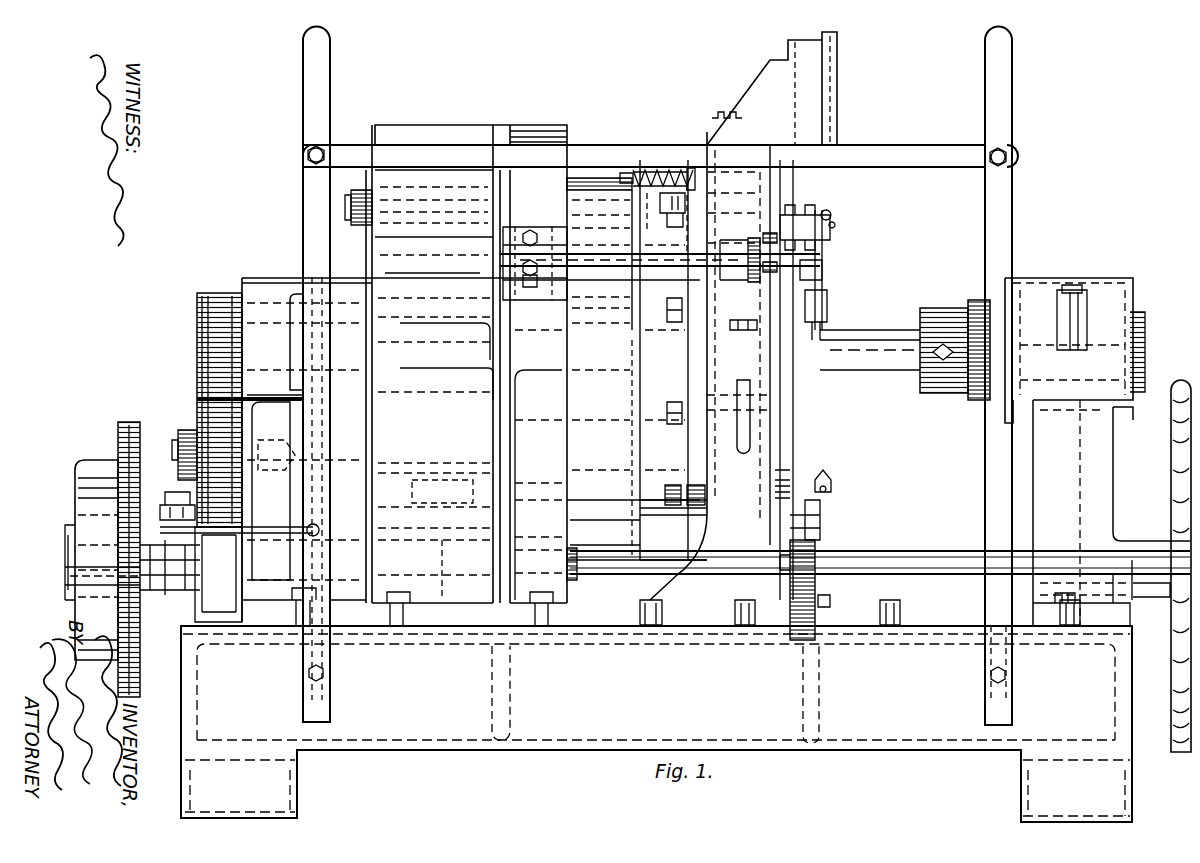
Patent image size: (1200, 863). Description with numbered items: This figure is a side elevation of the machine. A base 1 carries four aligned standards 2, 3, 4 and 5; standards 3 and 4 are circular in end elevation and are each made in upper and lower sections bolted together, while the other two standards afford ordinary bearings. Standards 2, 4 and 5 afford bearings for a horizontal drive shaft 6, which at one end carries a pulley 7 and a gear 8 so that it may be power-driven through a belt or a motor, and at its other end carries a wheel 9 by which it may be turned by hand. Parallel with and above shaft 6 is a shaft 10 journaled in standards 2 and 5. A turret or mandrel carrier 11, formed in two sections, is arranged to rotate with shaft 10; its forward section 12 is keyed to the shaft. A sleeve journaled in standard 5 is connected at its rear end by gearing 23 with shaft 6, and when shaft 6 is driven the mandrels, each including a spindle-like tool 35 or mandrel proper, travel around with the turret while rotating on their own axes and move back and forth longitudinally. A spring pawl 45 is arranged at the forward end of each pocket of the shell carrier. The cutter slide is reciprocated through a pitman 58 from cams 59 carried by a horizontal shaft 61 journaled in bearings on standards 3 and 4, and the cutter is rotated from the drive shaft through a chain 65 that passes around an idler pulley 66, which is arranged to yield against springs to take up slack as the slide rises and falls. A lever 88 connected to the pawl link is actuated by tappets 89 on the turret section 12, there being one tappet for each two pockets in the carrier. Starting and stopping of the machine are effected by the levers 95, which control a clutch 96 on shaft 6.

The base 1 is at (860, 751).
The standard 2 is at (1113, 515).
The standard 3 is at (790, 520).
The standard 4 is at (912, 88).
The standard 5 is at (363, 375).
The horizontal drive shaft 6 is at (892, 558).
The pulley 7 is at (95, 465).
The gear 8 is at (132, 424).
The wheel 9 is at (1172, 657).
The shaft 10 is at (880, 333).
The turret or mandrel carrier 11 is at (637, 360).
The forward turret section 12 is at (673, 360).
The gearing 23 is at (188, 444).
The spindle-like tool or mandrel proper 35 is at (783, 492).
The spring pawl 45 is at (825, 490).
The pitman 58 is at (815, 318).
The cams 59 is at (829, 222).
The horizontal shaft 61 is at (660, 281).
The chain 65 is at (818, 538).
The idler pulley 66 is at (783, 566).
The lever 88 is at (694, 202).
The tappets 89 is at (676, 323).
The levers 95 is at (303, 200).
The clutch 96 is at (160, 592).